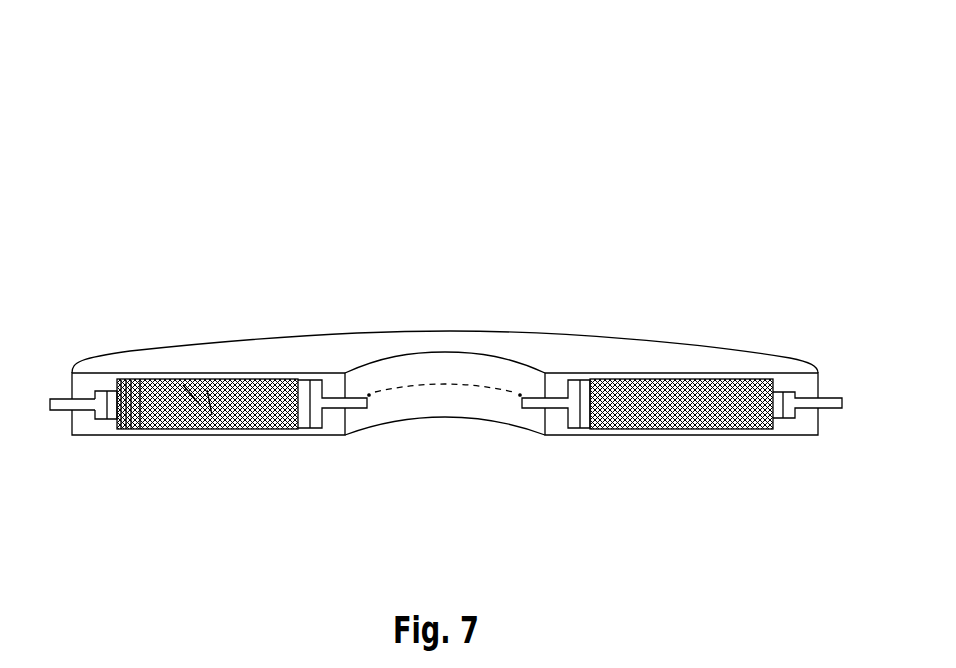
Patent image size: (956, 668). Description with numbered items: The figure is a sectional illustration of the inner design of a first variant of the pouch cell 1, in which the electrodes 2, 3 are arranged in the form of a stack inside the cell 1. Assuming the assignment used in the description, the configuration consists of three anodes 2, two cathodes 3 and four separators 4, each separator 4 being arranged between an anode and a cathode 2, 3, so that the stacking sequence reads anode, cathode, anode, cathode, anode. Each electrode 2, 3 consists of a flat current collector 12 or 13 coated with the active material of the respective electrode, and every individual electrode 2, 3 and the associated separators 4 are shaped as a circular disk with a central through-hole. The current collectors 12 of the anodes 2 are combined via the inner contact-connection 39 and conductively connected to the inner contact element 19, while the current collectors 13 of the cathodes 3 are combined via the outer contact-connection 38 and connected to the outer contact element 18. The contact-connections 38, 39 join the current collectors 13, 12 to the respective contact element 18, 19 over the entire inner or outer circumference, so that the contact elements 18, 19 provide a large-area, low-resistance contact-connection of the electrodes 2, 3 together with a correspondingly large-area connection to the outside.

The pouch cell 1 is at (697, 105).
The anode 2 is at (226, 395).
The cathode 3 is at (185, 385).
The separator 4 is at (150, 395).
The current collector 12 is at (288, 392).
The current collector 13 is at (180, 390).
The outer contact element 18 is at (60, 398).
The inner contact element 19 is at (357, 405).
The outer contact-connection 38 is at (794, 424).
The inner contact-connection 39 is at (578, 436).